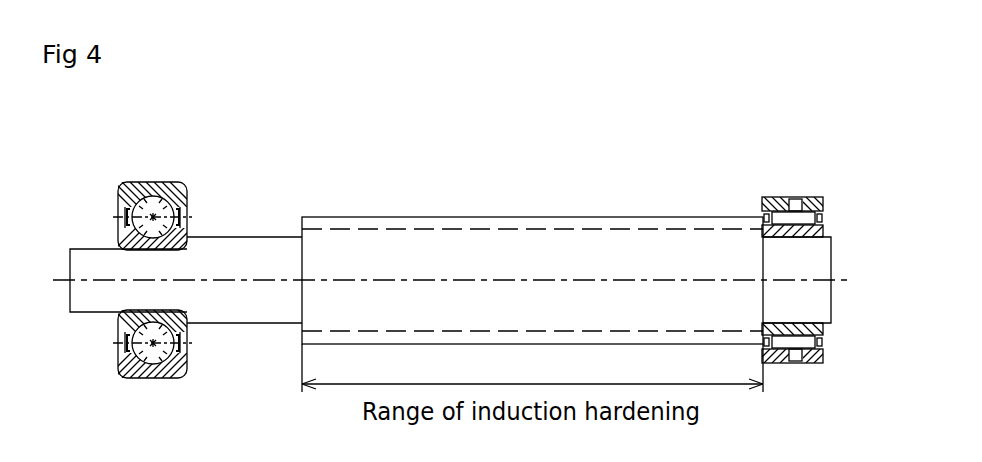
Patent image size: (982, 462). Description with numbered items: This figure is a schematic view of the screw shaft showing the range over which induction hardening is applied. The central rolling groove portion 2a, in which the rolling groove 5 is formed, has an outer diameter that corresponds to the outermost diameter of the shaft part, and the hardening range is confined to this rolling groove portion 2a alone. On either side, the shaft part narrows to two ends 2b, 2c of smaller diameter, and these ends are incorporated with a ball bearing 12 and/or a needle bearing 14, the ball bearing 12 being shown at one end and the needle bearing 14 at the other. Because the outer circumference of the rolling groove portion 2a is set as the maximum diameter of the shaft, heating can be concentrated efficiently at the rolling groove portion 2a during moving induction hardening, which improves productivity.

The rolling groove portion 2a is at (442, 216).
The end of smaller diameter 2b is at (83, 247).
The end of smaller diameter 2c is at (827, 235).
The rolling groove 5 is at (635, 222).
The ball bearing 12 is at (150, 192).
The needle bearing 14 is at (805, 206).